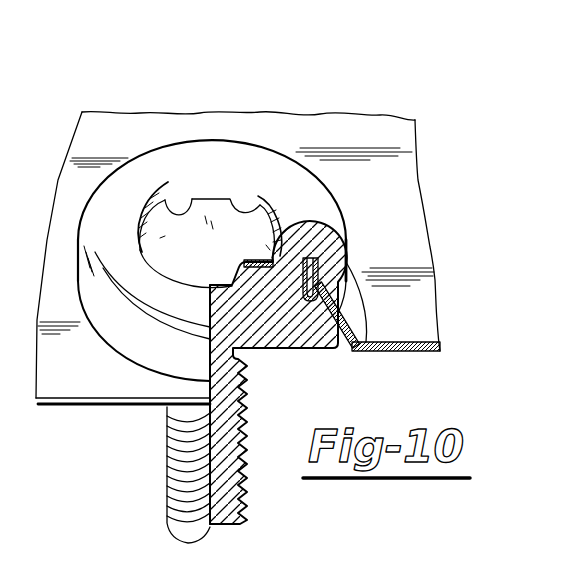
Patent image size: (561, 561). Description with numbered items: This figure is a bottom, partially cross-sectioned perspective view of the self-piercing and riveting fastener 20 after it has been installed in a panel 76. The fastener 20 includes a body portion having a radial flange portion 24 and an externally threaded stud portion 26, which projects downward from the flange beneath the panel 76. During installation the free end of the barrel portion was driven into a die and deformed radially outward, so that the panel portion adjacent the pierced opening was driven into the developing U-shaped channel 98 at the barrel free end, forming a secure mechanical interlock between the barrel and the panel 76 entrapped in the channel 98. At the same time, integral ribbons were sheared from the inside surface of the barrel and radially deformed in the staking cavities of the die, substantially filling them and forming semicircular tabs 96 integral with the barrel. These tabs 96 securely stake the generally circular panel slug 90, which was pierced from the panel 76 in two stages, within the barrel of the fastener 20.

The self-piercing and riveting fastener 20 is at (282, 352).
The radial flange portion 24 is at (362, 332).
The stud portion 26 is at (163, 499).
The panel 76 is at (300, 134).
The panel slug 90 is at (210, 211).
The semicircular tabs 96 is at (181, 202).
The U-shaped channel 98 is at (310, 198).